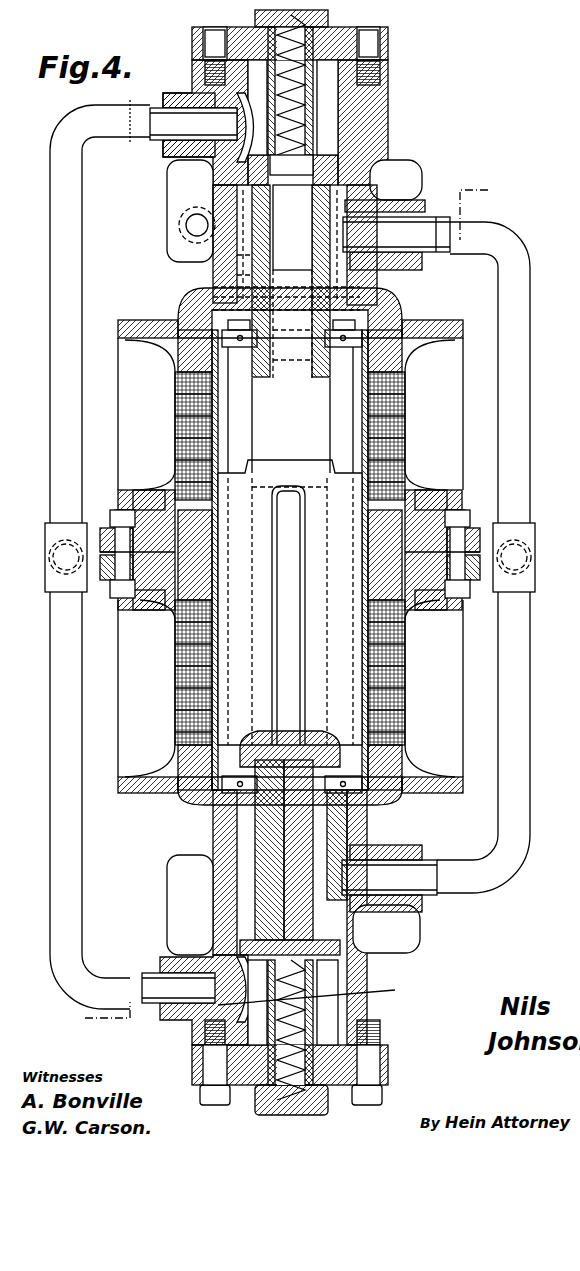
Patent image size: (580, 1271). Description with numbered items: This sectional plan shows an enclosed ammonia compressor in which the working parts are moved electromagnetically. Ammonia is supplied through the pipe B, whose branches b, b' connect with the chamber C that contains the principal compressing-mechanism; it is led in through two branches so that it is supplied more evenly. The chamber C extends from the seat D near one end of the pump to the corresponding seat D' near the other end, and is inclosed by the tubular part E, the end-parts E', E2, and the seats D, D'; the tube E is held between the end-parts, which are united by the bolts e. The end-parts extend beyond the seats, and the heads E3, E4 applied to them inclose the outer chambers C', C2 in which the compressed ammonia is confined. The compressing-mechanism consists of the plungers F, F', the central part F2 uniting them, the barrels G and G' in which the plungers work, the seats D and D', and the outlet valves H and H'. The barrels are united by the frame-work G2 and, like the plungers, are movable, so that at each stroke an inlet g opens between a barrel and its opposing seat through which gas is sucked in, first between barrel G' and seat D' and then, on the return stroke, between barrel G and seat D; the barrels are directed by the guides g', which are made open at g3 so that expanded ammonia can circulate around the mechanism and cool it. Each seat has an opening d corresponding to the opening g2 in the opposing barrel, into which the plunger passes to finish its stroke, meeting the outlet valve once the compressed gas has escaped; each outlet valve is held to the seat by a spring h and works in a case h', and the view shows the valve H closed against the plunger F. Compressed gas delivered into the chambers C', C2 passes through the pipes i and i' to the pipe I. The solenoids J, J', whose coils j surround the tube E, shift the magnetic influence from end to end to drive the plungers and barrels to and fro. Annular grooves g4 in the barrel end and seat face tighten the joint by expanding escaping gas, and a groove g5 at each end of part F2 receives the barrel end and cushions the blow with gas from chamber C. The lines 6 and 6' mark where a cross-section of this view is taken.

The head E4 is at (392, 45).
The spring h is at (291, 577).
The case h' is at (202, 113).
The outlet valve H' is at (295, 122).
The chamber C2 is at (348, 124).
The end-part E2 is at (373, 147).
The inlet g is at (390, 212).
The annular grooves g4 is at (377, 187).
The section line 6— 6 is at (285, 603).
The seat D' is at (206, 211).
The chamber C is at (290, 513).
The guides g' is at (255, 615).
The perforations g3 is at (160, 228).
The barrel G' is at (196, 269).
The opening g2 is at (292, 227).
The opening d is at (291, 165).
The plunger F' is at (291, 281).
The frame-work G2 is at (237, 373).
The coils j is at (175, 418).
The solenoid J' is at (170, 558).
The tubular part E is at (290, 557).
The bolts e is at (120, 512).
The central part F2 is at (290, 546).
The groove g5 is at (309, 615).
The pipe I is at (66, 557).
The pipe B is at (520, 562).
The branch b' is at (490, 372).
The pipe i' is at (100, 311).
The pipe i is at (90, 800).
The branch b is at (483, 742).
The solenoid J is at (400, 558).
The barrel G is at (194, 888).
The plunger F is at (290, 843).
The seat D is at (190, 905).
The end-part E' is at (402, 909).
The section line 6' is at (314, 991).
The chamber C' is at (333, 1030).
The outlet valve H is at (198, 1008).
The head E3 is at (390, 1062).